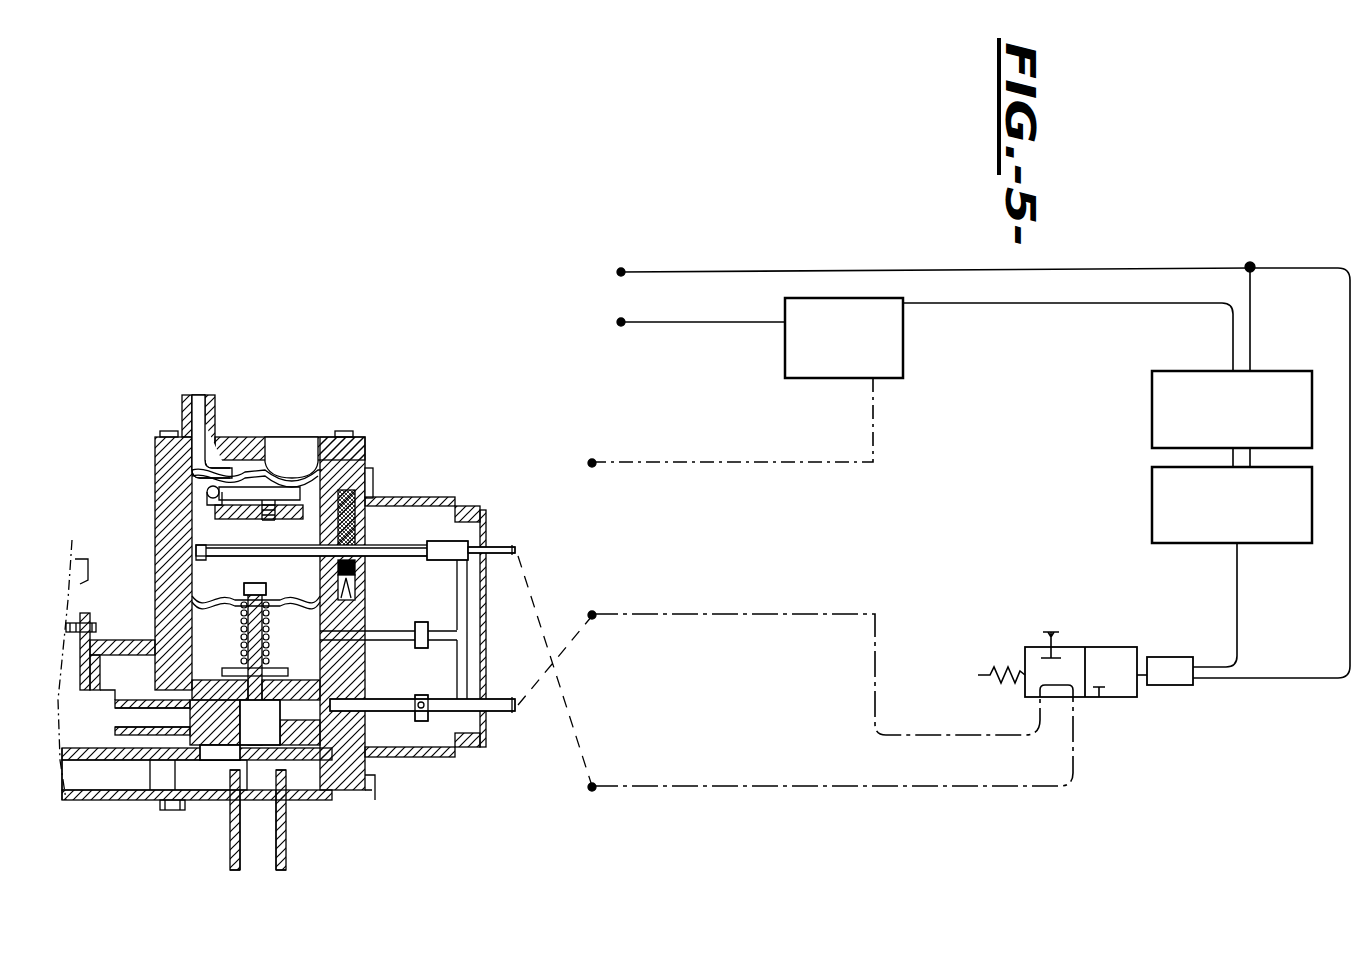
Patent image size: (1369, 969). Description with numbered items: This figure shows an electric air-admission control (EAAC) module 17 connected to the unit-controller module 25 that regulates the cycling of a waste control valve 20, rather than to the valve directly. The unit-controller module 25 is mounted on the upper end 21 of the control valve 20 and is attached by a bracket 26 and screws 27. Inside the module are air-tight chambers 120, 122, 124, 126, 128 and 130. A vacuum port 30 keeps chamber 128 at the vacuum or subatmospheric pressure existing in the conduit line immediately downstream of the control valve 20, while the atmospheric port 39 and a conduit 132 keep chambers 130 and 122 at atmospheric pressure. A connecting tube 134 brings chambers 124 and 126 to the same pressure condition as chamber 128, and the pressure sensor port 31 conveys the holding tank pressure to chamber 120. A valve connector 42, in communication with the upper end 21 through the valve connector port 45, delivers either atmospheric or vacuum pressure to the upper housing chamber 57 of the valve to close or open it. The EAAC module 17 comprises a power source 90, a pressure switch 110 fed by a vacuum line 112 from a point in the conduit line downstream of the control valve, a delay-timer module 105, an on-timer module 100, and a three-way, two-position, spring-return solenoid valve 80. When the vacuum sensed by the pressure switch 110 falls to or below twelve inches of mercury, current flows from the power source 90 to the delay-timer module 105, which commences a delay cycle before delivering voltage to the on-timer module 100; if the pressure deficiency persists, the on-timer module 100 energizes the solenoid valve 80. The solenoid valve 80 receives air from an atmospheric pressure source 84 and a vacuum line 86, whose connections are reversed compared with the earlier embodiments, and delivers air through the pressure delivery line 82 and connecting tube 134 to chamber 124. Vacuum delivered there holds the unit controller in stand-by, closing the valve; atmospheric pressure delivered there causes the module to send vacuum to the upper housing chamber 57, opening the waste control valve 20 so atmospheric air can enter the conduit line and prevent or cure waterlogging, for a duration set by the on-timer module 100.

The EAAC module 17 is at (1220, 713).
The waste control valve 20 is at (74, 850).
The upper end of control valve 21 is at (80, 584).
The unit-controller module 25 is at (484, 748).
The bracket 26 is at (126, 656).
The screws 27 is at (60, 650).
The vacuum port 30 is at (130, 716).
The pressure sensor port 31 is at (208, 397).
The atmospheric port 39 is at (272, 872).
The valve connector 42 is at (120, 790).
The valve connector port 45 is at (190, 788).
The upper housing chamber 57 is at (72, 545).
The solenoid valve 80 is at (1103, 700).
The pressure delivery line 82 is at (830, 787).
The atmospheric pressure source 84 is at (1050, 562).
The vacuum line 86 is at (745, 613).
The power source 90 is at (897, 300).
The on-timer module 100 is at (1151, 497).
The delay-timer module 105 is at (1151, 407).
The pressure switch 110 is at (903, 365).
The vacuum line 112 is at (733, 461).
The chamber 120 is at (295, 452).
The chamber 122 is at (283, 475).
The chamber 124 is at (200, 537).
The chamber 126 is at (200, 625).
The chamber 128 is at (200, 688).
The chamber 130 is at (212, 765).
The conduit 132 is at (368, 478).
The connecting tube 134 is at (470, 592).